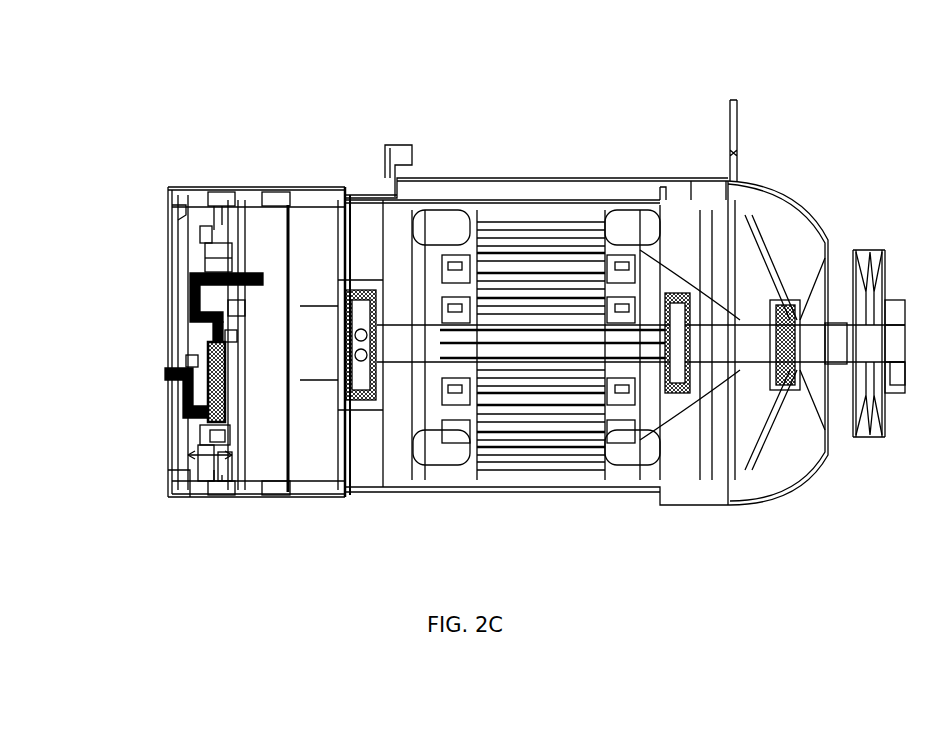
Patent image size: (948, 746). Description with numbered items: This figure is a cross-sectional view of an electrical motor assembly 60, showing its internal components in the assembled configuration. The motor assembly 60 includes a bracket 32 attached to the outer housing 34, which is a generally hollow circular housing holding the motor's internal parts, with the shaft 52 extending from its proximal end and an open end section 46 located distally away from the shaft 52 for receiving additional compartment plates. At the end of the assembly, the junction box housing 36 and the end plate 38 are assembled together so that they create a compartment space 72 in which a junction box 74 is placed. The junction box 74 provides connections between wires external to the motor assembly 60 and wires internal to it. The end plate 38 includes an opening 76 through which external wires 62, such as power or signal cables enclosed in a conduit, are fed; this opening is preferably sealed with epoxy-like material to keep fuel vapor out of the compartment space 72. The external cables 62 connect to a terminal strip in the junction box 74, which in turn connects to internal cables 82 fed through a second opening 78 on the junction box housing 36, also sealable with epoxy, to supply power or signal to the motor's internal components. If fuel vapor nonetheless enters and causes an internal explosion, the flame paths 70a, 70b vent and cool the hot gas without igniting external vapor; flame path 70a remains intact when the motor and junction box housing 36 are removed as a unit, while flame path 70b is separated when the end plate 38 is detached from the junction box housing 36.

The bracket 32 is at (520, 177).
The outer housing 34 is at (565, 495).
The junction box housing 36 is at (260, 487).
The end plate 38 is at (178, 497).
The open end section 46 is at (350, 480).
The shaft 52 is at (840, 352).
The electrical motor assembly 60 is at (834, 126).
The external wires 62 is at (187, 407).
The flame path 70a is at (285, 198).
The flame path 70b is at (207, 197).
The compartment space 72 is at (228, 490).
The junction box 74 is at (212, 490).
The opening 76 is at (167, 370).
The opening 78 is at (190, 287).
The internal cables 82 is at (190, 320).